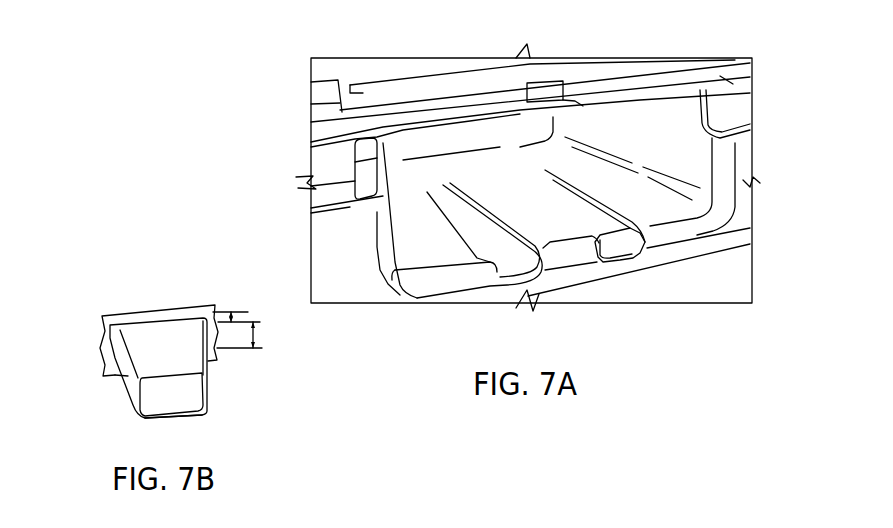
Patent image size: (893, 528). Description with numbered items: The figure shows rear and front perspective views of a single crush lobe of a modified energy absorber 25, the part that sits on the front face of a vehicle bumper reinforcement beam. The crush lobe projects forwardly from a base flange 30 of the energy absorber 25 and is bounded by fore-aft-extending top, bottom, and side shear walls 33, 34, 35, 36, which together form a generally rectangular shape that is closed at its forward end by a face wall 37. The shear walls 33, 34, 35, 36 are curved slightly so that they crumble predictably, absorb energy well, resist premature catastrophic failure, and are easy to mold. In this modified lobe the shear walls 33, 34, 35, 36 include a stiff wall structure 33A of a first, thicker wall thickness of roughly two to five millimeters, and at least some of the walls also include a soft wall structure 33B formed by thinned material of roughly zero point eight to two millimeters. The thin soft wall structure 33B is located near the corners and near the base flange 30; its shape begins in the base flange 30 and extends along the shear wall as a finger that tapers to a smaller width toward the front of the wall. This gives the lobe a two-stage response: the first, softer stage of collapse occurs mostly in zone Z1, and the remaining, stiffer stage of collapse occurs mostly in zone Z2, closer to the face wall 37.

In FIG. 7A, the energy absorber 25 is at (280, 57).
In FIG. 7B, the energy absorber 25 is at (130, 300).
In FIG. 7B, the base flange 30 is at (105, 327).
In FIG. 7A, the shear wall 33 is at (425, 137).
In FIG. 7B, the shear wall 33 is at (170, 338).
In FIG. 7A, the stiff wall structure 33A is at (522, 205).
In FIG. 7A, the soft wall structure 33B is at (507, 270).
In FIG. 7A, the shear wall 34 is at (423, 252).
In FIG. 7B, the shear wall 34 is at (180, 418).
In FIG. 7A, the shear wall 35 is at (315, 192).
In FIG. 7B, the shear wall 35 is at (127, 376).
In FIG. 7A, the shear wall 36 is at (667, 121).
In FIG. 7B, the shear wall 36 is at (212, 373).
In FIG. 7A, the face wall 37 is at (355, 162).
In FIG. 7B, the face wall 37 is at (160, 402).
In FIG. 7B, the zone Z1 is at (232, 303).
In FIG. 7B, the zone Z2 is at (260, 337).